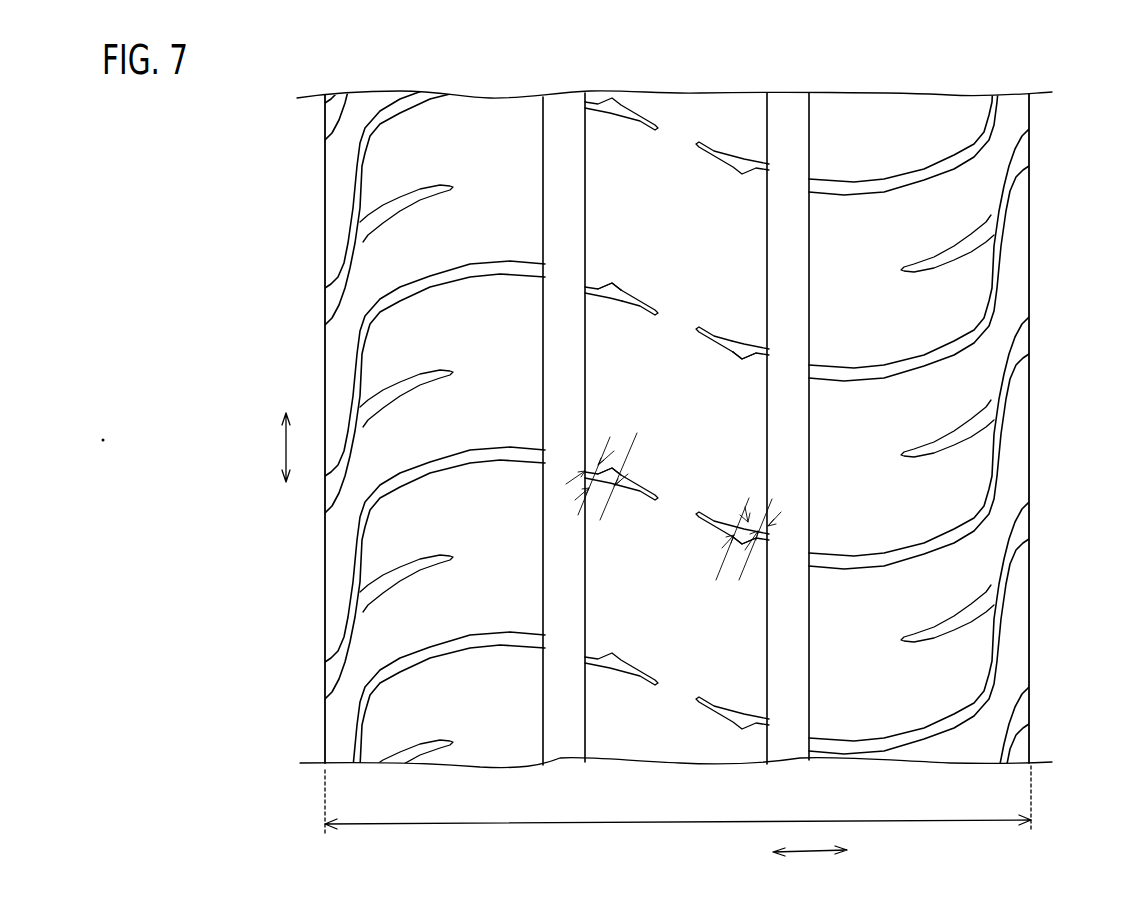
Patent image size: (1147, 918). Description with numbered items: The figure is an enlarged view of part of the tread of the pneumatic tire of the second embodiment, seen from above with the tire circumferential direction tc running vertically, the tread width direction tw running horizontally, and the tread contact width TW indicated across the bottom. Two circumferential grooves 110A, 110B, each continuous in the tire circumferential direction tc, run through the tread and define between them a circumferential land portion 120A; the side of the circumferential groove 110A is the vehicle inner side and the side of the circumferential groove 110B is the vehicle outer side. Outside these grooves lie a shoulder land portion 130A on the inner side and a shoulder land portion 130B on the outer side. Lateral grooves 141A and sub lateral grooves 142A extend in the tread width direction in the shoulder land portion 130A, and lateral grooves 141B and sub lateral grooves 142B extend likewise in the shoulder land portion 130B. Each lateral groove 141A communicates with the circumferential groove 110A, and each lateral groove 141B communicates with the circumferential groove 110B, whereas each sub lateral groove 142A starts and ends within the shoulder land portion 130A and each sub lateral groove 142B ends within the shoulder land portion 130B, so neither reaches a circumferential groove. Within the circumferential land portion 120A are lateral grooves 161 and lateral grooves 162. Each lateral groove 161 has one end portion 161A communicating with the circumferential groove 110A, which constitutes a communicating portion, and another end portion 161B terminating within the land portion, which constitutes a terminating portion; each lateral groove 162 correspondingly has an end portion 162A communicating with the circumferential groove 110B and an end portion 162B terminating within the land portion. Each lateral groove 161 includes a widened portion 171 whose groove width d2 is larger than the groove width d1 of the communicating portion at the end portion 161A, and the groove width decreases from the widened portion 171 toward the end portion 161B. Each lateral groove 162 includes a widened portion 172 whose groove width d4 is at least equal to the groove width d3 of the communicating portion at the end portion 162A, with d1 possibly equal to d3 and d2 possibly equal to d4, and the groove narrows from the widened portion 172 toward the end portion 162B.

The shoulder land portion 130A is at (482, 113).
The circumferential groove 110A is at (565, 112).
The circumferential land portion 120A is at (685, 112).
The circumferential groove 110B is at (787, 110).
The shoulder land portion 130B is at (910, 112).
The lateral groove 141A is at (393, 292).
The sub lateral groove 142A is at (396, 384).
The lateral groove 141B is at (950, 517).
The sub lateral groove 142B is at (950, 430).
The lateral groove 161 is at (605, 391).
The end portion 161A is at (571, 288).
The end portion 161B is at (665, 300).
The lateral groove 162 is at (789, 435).
The end portion 162A is at (781, 356).
The end portion 162B is at (739, 345).
The widened portion 171 is at (612, 282).
The widened portion 172 is at (742, 361).
The groove width of communicating portion d1 is at (583, 475).
The groove width of widened portion d2 is at (605, 501).
The groove width of communicating portion d3 is at (773, 531).
The groove width of widened portion d4 is at (735, 513).
The tire circumferential direction tc is at (274, 447).
The tread contact width TW is at (678, 809).
The tread width direction tw is at (810, 865).